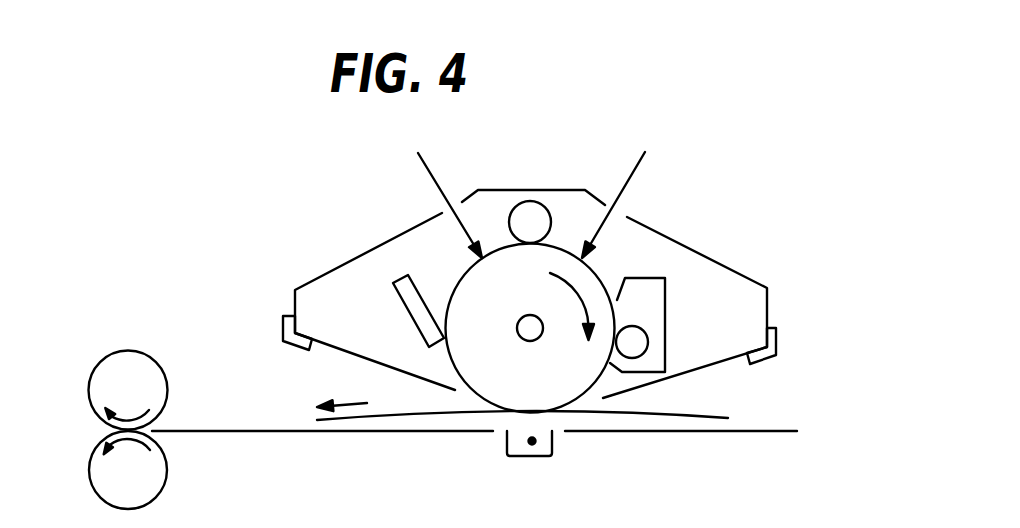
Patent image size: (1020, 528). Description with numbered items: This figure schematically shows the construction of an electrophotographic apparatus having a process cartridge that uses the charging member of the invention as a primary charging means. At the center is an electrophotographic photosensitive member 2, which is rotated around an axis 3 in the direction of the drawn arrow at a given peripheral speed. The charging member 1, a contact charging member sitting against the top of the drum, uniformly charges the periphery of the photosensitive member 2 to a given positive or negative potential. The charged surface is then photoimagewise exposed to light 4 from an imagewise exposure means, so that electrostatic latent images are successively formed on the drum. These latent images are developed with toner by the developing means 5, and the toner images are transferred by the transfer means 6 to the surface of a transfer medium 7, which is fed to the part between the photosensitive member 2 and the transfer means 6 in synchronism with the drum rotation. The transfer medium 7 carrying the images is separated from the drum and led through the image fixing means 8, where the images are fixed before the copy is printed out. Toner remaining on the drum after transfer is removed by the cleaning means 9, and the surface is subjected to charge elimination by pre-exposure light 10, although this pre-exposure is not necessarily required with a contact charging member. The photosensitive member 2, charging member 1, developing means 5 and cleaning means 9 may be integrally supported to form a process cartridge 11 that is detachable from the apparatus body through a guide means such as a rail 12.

The charging member 1 is at (542, 200).
The electrophotographic photosensitive member 2 is at (463, 279).
The axis 3 is at (520, 339).
The light 4 is at (635, 172).
The developing means 5 is at (667, 323).
The transfer means 6 is at (527, 456).
The transfer medium 7 is at (697, 415).
The image fixing means 8 is at (158, 363).
The cleaning means 9 is at (407, 307).
The pre-exposure light 10 is at (438, 182).
The process cartridge 11 is at (702, 252).
The rail 12 is at (283, 325).